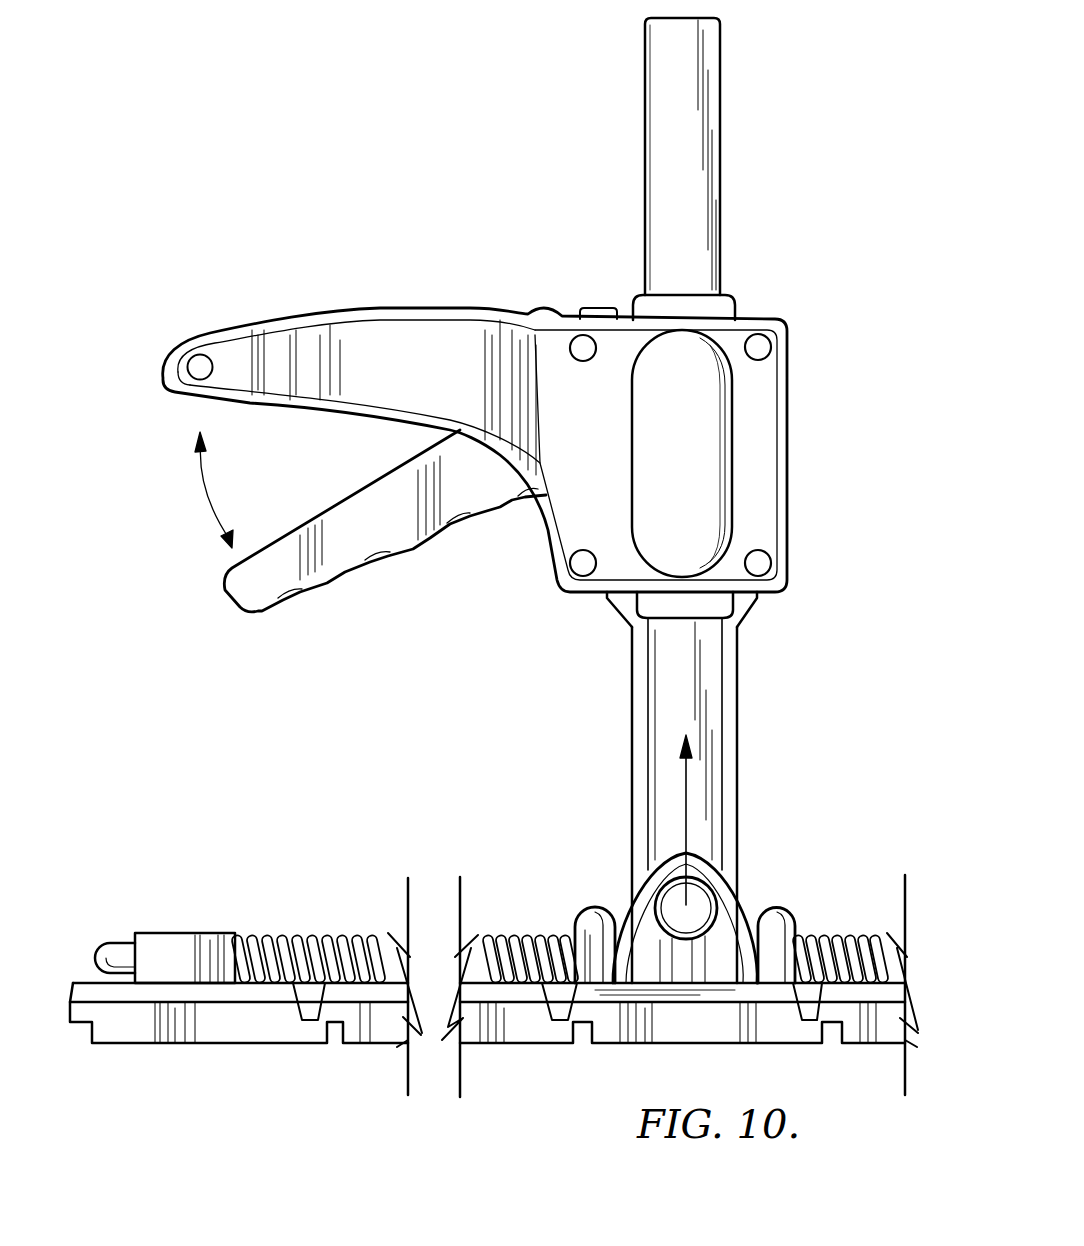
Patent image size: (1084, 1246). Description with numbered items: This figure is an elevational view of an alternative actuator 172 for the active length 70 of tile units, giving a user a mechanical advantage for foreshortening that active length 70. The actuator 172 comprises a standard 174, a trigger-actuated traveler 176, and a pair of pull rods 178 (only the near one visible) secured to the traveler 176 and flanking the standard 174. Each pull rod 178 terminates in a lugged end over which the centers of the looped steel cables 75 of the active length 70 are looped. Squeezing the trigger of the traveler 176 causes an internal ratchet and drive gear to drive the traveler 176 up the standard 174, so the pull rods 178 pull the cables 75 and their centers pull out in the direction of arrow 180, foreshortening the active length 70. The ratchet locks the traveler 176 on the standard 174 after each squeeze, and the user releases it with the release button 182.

The actuator 172 is at (338, 188).
The standard 174 is at (645, 133).
The trigger-actuated traveler 176 is at (361, 307).
The pull rod 178 is at (717, 692).
The direction arrow 180 is at (688, 800).
The release button 182 is at (600, 306).
The looped steel cable 75 is at (628, 899).
The active length 70 is at (265, 882).